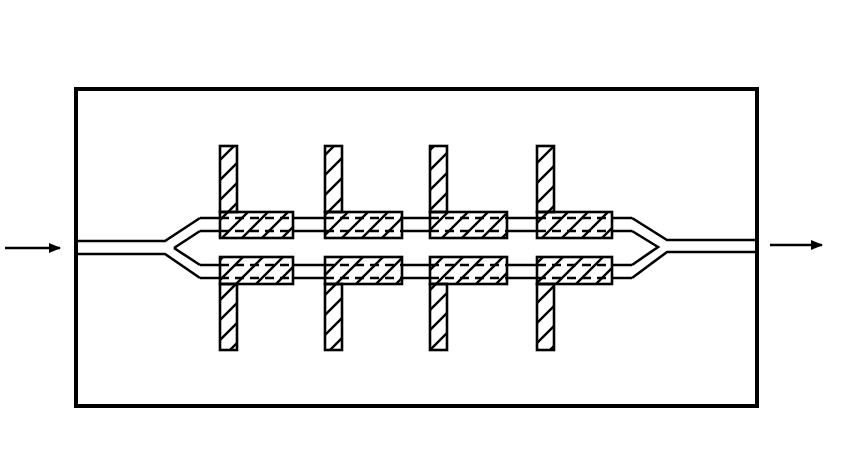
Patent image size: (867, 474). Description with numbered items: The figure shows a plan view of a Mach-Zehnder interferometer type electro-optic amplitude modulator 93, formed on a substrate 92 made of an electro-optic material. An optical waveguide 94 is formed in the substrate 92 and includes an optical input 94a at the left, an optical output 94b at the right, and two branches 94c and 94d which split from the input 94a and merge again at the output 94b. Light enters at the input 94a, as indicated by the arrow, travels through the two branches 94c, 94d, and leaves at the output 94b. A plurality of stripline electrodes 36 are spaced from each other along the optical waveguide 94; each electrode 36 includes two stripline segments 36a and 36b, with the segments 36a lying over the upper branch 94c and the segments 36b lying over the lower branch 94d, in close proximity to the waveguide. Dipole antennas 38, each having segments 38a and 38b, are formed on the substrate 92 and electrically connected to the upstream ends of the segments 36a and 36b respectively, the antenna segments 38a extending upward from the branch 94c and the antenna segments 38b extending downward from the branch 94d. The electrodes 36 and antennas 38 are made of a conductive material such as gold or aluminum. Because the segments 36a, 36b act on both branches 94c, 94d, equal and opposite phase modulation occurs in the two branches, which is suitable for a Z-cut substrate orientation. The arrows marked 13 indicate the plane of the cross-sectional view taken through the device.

The integrated optic modulator device 93 is at (449, 237).
The substrate 92 is at (260, 89).
The optical waveguide 94 is at (449, 259).
The optical input 94a is at (120, 246).
The optical output 94b is at (730, 244).
The branch 94c is at (648, 228).
The branch 94d is at (648, 262).
The electrode 36 is at (416, 328).
The stripline segment 36a is at (478, 212).
The stripline segment 36b is at (473, 286).
The antenna 38 is at (416, 144).
The antenna segment 38a is at (437, 178).
The antenna segment 38b is at (537, 328).
The section line 13- 13 is at (583, 200).